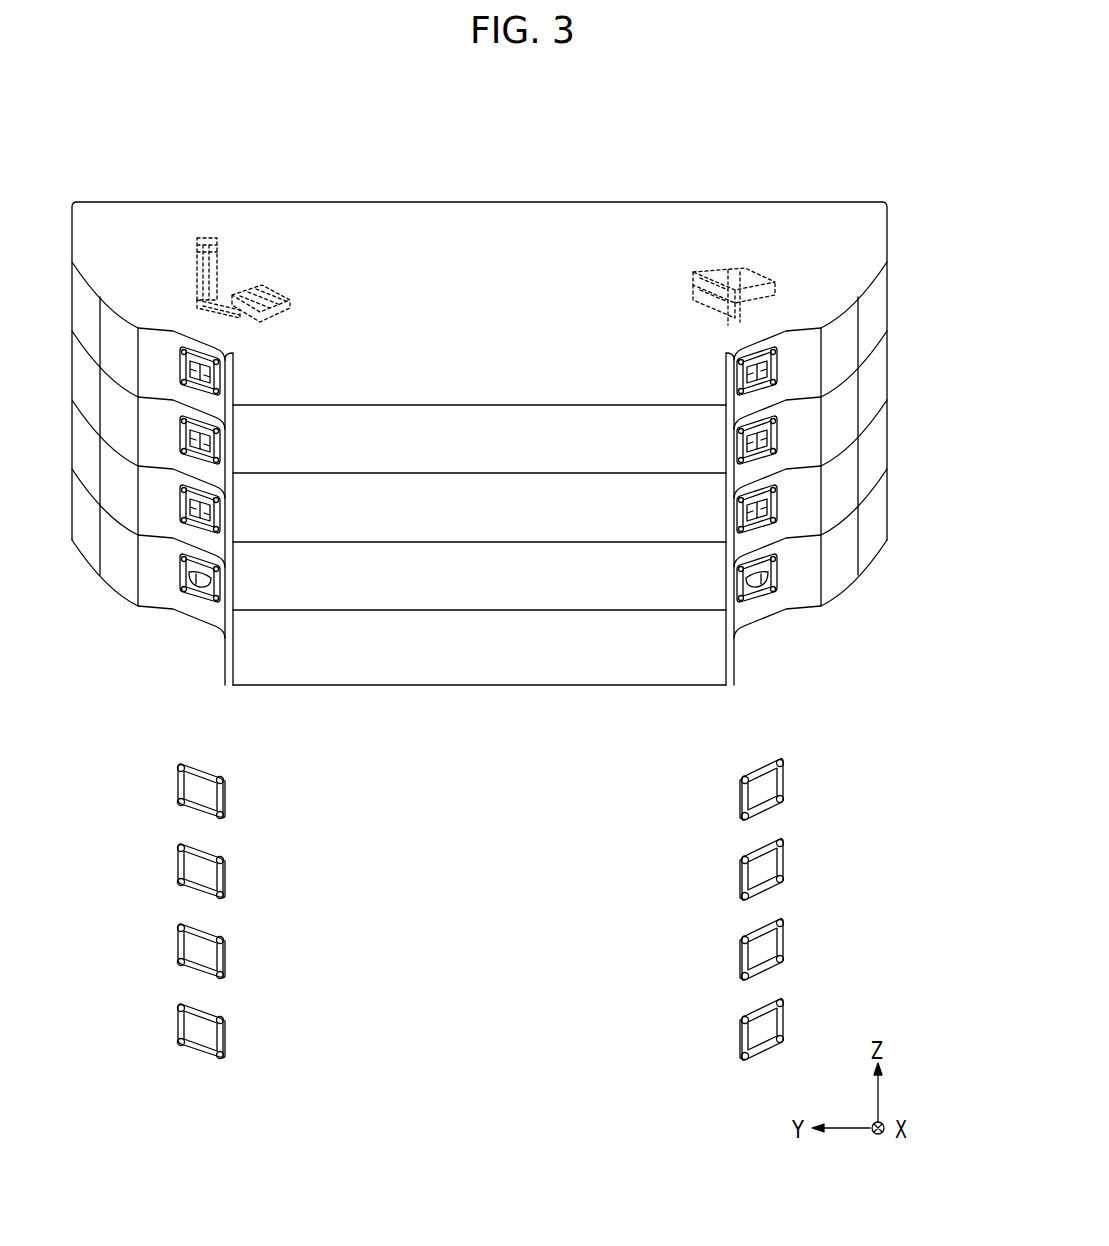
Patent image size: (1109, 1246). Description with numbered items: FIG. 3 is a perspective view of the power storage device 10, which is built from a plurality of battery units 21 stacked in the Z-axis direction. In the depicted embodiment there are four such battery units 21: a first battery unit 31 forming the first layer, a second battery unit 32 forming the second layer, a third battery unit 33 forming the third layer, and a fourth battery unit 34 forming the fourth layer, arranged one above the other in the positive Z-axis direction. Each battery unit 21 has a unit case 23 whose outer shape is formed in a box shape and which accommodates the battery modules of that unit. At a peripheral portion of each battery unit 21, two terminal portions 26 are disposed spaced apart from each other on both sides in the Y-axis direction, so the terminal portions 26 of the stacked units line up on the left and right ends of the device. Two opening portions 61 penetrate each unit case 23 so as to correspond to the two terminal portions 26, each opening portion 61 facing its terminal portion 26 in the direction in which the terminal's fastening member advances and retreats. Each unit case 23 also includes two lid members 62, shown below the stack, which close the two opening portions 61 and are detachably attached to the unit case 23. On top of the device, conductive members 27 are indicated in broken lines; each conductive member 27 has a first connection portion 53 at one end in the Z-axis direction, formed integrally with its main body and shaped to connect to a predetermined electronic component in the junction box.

The power storage device 10 is at (828, 158).
The battery unit 21 is at (876, 307).
The first battery unit 31 is at (479, 553).
The second battery unit 32 is at (479, 449).
The third battery unit 33 is at (479, 380).
The fourth battery unit 34 is at (479, 311).
The unit case 23 is at (107, 343).
The terminal portion 26 is at (204, 380).
The conductive member 27 is at (220, 302).
The first connection portion 53 is at (490, 217).
The opening portion 61 is at (187, 363).
The lid member 62 is at (190, 1028).